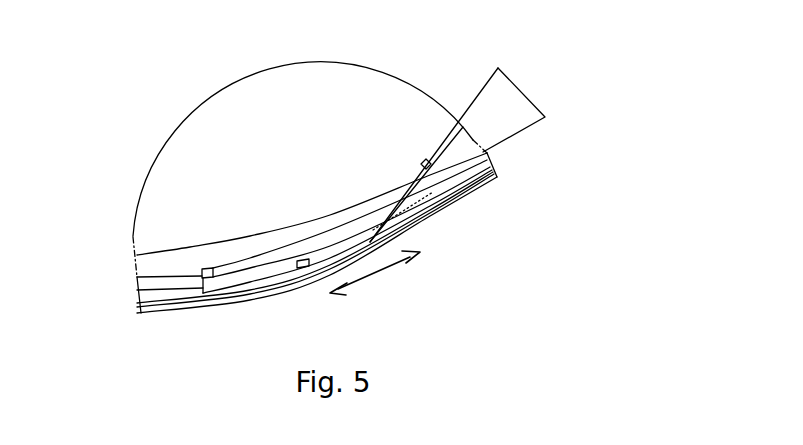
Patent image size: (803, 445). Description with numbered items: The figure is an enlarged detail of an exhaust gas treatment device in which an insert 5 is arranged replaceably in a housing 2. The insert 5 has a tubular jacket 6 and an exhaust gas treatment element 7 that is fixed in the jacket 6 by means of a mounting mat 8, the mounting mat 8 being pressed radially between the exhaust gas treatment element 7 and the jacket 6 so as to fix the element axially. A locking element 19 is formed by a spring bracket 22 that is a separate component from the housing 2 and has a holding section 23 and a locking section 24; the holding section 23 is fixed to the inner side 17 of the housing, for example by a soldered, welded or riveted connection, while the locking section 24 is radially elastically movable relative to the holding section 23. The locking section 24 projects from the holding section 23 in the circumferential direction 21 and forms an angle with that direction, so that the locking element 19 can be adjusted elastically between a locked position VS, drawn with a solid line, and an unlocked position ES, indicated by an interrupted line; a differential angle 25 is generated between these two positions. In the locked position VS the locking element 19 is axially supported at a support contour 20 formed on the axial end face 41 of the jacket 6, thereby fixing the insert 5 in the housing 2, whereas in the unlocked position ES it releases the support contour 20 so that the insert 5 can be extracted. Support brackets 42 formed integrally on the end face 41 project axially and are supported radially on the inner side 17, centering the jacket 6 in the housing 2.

The housing 2 is at (173, 320).
The insert 5 is at (273, 269).
The jacket 6 is at (222, 262).
The exhaust gas treatment element 7 is at (202, 130).
The mounting mat 8 is at (198, 258).
The inner side of the housing 17 is at (253, 274).
The locking element 19 is at (411, 155).
The support contour 20 is at (262, 258).
The circumferential direction 21 is at (377, 280).
The spring bracket 22 is at (416, 184).
The holding section 23 is at (335, 253).
The locking section 24 is at (381, 185).
The differential angle 25 is at (528, 93).
The axial end face 41 is at (283, 255).
The support bracket 42 is at (157, 300).
The locked position VS is at (408, 180).
The unlocked position ES is at (436, 219).